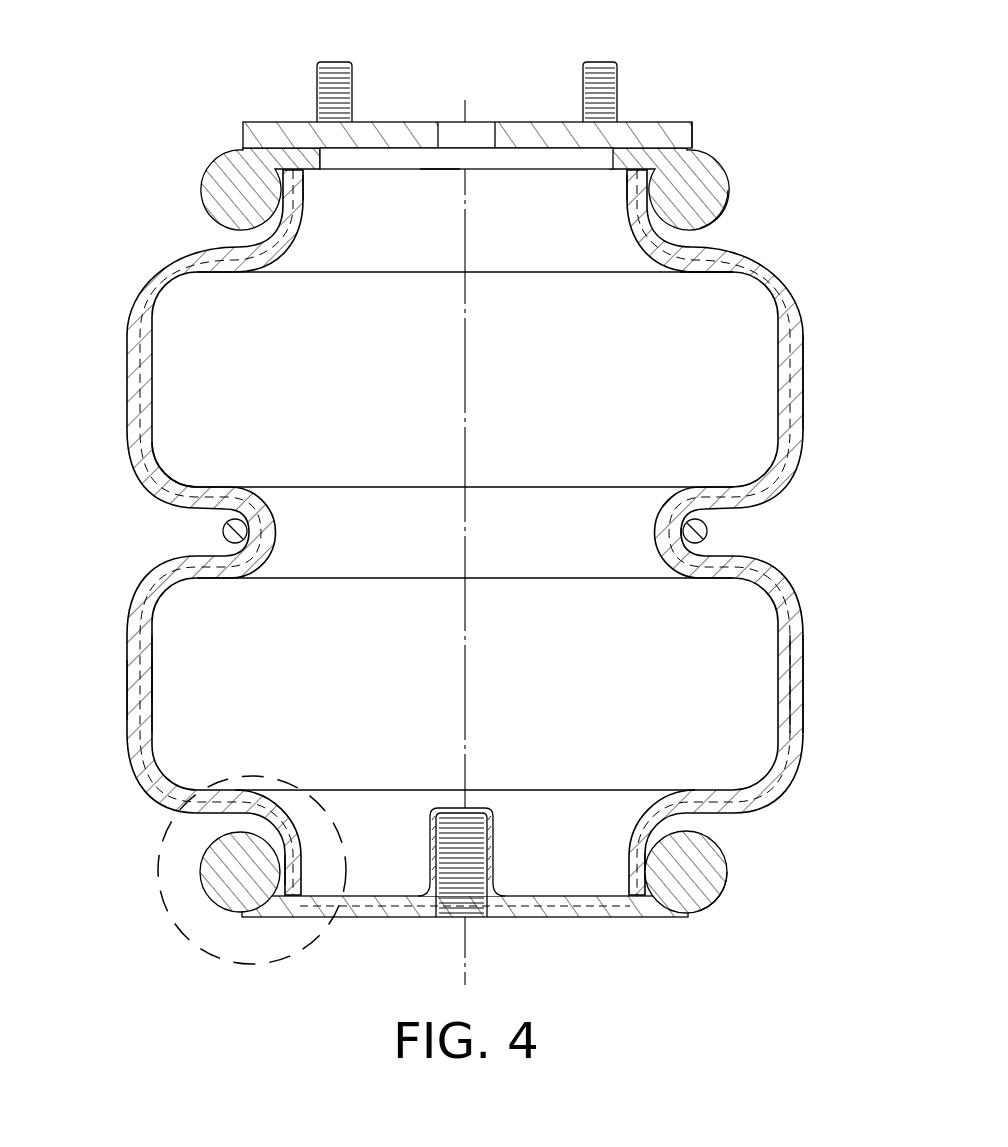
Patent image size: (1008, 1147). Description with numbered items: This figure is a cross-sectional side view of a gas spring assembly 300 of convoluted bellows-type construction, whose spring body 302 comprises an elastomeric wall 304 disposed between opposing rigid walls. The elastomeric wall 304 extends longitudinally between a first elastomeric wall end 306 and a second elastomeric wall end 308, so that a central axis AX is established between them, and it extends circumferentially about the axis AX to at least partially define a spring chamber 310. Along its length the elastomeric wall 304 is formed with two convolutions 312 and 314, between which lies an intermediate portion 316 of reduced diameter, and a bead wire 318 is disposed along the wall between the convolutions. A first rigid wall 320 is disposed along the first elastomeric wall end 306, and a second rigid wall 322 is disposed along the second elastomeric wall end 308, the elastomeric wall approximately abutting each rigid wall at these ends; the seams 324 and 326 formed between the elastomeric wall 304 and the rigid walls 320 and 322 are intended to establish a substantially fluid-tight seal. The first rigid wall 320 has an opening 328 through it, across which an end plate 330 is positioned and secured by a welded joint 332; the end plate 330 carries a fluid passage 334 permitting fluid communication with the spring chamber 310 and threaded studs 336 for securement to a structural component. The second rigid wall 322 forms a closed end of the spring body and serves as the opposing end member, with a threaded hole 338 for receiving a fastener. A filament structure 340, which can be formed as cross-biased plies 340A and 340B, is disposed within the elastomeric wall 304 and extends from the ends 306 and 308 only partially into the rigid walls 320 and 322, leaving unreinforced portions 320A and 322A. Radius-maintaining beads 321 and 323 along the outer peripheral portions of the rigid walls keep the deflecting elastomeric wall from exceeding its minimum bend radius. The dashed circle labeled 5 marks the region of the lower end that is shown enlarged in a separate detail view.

The gas spring assembly 300 is at (770, 245).
The spring body 302 is at (115, 355).
The elastomeric wall 304 is at (160, 500).
The first elastomeric wall end 306 is at (314, 208).
The second elastomeric wall end 308 is at (618, 832).
The spring chamber 310 is at (728, 312).
The convolution 312 is at (805, 360).
The convolution 314 is at (805, 675).
The intermediate portion 316 is at (682, 533).
The bead wire 318 is at (708, 531).
The first rigid wall 320 is at (202, 160).
The unreinforced portion 320A is at (622, 158).
The radius-maintaining bead 321 is at (705, 182).
The second rigid wall 322 is at (727, 905).
The unreinforced portion 322A is at (520, 915).
The radius-maintaining bead 323 is at (705, 862).
The seam 324 is at (632, 196).
The seam 326 is at (262, 888).
The opening 328 is at (440, 175).
The end plate 330 is at (292, 133).
The welded joint 332 is at (696, 146).
The fluid passage 334 is at (480, 133).
The threaded studs 336 is at (335, 60).
The threaded hole 338 is at (452, 913).
The filament structure 340 is at (150, 774).
The cross-biased ply 340A is at (147, 676).
The cross-biased ply 340B is at (137, 704).
The central axis AX is at (476, 362).
The detail region of FIG. 5 is at (242, 870).